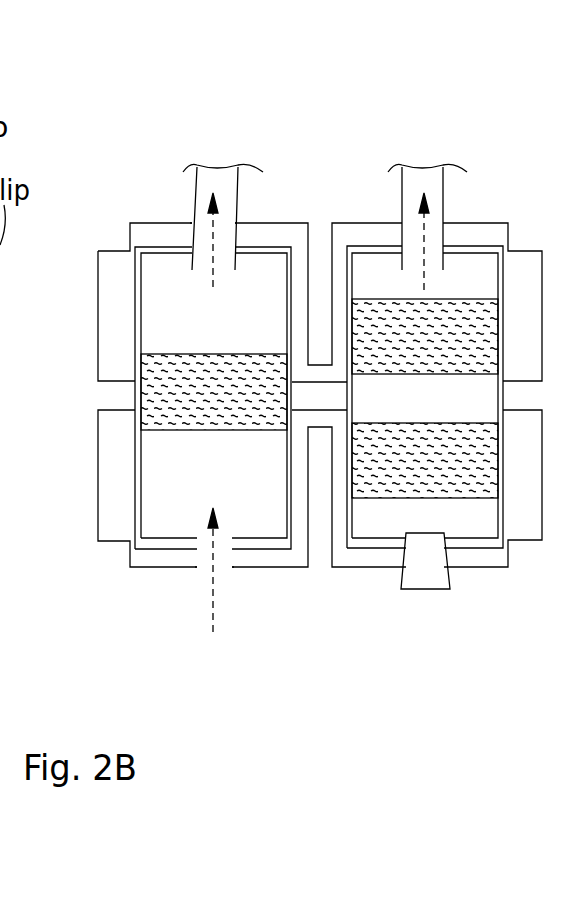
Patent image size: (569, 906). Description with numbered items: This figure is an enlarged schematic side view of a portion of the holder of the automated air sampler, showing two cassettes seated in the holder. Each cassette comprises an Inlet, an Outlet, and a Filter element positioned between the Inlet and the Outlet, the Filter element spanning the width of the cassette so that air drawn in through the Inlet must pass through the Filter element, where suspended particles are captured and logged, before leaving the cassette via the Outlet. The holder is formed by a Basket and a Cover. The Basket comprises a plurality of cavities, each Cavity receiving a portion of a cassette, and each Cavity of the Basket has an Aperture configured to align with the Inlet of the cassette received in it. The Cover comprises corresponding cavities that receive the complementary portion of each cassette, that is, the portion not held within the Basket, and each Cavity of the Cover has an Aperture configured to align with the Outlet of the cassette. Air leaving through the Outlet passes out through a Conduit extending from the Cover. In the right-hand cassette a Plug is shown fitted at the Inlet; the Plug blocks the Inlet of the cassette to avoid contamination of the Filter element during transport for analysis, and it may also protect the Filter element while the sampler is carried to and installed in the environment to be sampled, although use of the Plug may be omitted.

The cover Cover is at (377, 233).
The basket Basket is at (292, 560).
The element cassette is at (367, 267).
The conduit Conduit is at (238, 165).
The outlet Outlet is at (203, 262).
The cavity Cavity is at (475, 250).
The inlet Inlet is at (200, 567).
The aperture Aperture is at (203, 233).
The filter element Filter element is at (178, 412).
The plug Plug is at (420, 573).